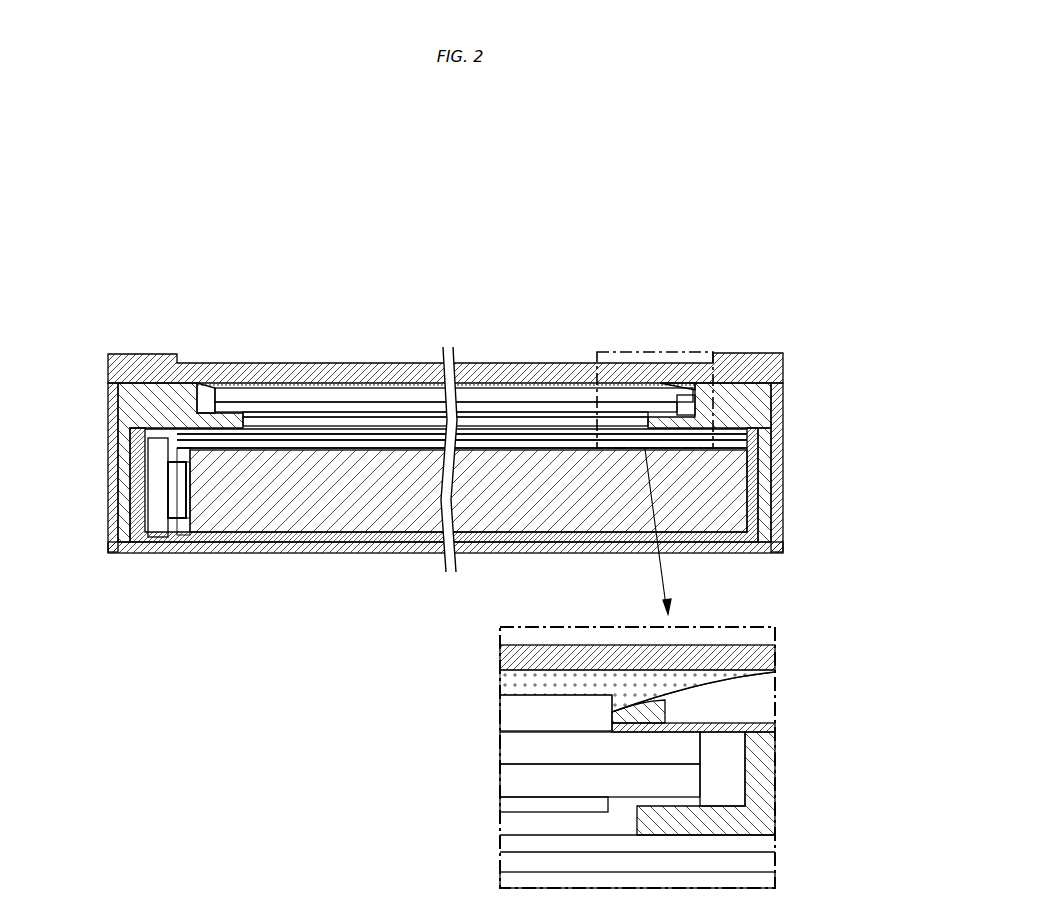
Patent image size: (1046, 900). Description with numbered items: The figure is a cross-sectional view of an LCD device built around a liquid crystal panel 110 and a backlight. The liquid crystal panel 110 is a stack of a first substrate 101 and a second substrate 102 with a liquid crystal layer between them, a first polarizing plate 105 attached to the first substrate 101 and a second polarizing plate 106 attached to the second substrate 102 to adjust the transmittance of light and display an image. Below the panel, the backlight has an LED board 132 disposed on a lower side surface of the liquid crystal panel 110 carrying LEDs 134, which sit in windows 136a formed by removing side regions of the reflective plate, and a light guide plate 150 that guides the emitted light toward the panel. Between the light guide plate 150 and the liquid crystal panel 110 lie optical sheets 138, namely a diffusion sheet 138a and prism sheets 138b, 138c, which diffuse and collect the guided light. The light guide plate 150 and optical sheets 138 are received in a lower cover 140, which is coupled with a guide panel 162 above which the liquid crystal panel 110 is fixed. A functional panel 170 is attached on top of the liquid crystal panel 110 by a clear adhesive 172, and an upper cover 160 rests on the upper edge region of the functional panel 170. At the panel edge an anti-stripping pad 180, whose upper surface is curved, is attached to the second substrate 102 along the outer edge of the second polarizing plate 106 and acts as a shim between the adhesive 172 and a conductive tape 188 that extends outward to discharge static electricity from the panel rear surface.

The liquid crystal panel 110 is at (412, 299).
The first substrate 101 is at (270, 407).
The second substrate 102 is at (310, 402).
The first polarizing plate 105 is at (347, 412).
The second polarizing plate 106 is at (387, 390).
The optical sheets 138 is at (493, 299).
The diffusion sheet 138a is at (583, 447).
The prism sheet 138b is at (545, 440).
The prism sheet 138c is at (507, 430).
The functional panel 170 is at (645, 372).
The adhesive 172 is at (515, 683).
The anti-stripping pad 180 is at (665, 703).
The conductive tape 188 is at (728, 724).
The guide panel 162 is at (735, 405).
The upper cover 160 is at (783, 410).
The lower cover 140 is at (755, 513).
The light guide plate 150 is at (371, 510).
The window 136a is at (182, 468).
The LED board 132 is at (157, 523).
The LED 134 is at (183, 495).